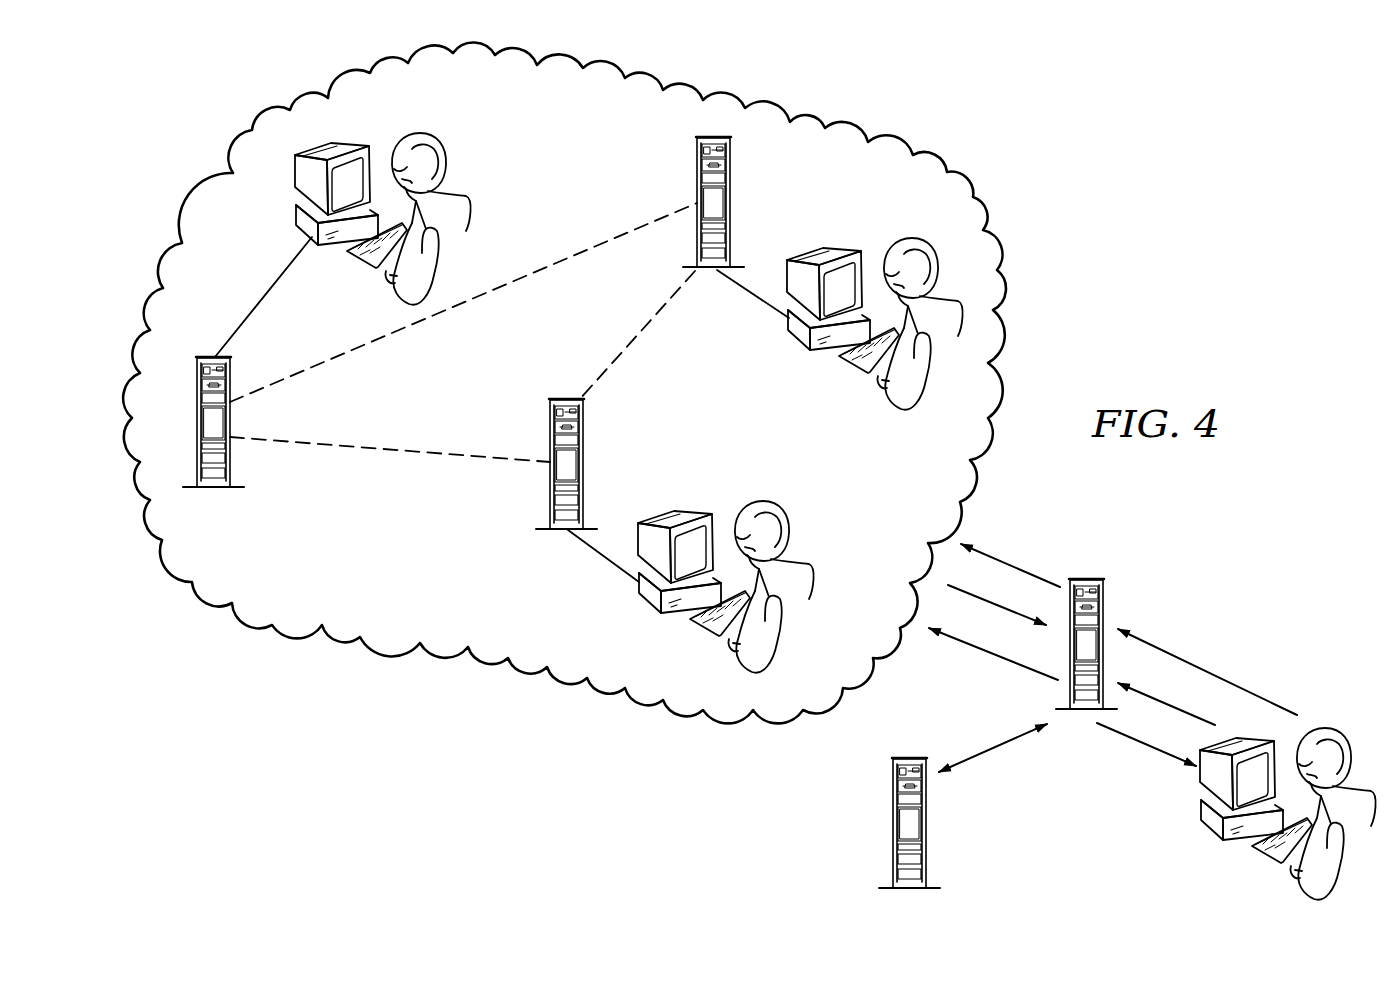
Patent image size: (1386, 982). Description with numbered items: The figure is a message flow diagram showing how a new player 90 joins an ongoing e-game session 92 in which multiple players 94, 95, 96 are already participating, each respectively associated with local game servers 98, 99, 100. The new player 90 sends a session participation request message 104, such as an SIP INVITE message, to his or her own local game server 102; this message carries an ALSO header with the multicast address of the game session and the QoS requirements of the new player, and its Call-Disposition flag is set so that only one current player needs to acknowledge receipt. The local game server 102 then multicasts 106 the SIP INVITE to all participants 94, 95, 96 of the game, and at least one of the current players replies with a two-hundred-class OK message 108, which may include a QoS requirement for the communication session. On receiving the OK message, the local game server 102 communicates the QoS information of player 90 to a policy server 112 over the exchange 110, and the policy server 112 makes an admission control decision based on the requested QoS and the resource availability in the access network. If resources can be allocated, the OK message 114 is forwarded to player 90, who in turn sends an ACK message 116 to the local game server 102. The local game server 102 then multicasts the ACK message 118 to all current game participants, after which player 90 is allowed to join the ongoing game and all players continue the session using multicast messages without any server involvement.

The new player 90 is at (1326, 711).
The ongoing e-game session 92 is at (230, 150).
The player 94 is at (461, 126).
The player 95 is at (874, 226).
The player 96 is at (753, 482).
The local game server 98 is at (196, 425).
The local game server 99 is at (731, 173).
The local game server 100 is at (549, 498).
The local game server 102 is at (1088, 577).
The session participation request message 104 is at (1133, 685).
The multicast of SIP INVITE 106 is at (1007, 559).
The OK message 108 is at (970, 585).
The data flow between policy server and local game server 110 is at (997, 748).
The policy server 112 is at (892, 858).
The OK message 114 is at (1143, 748).
The ACK message 116 is at (1210, 666).
The multicast ACK message 118 is at (992, 658).